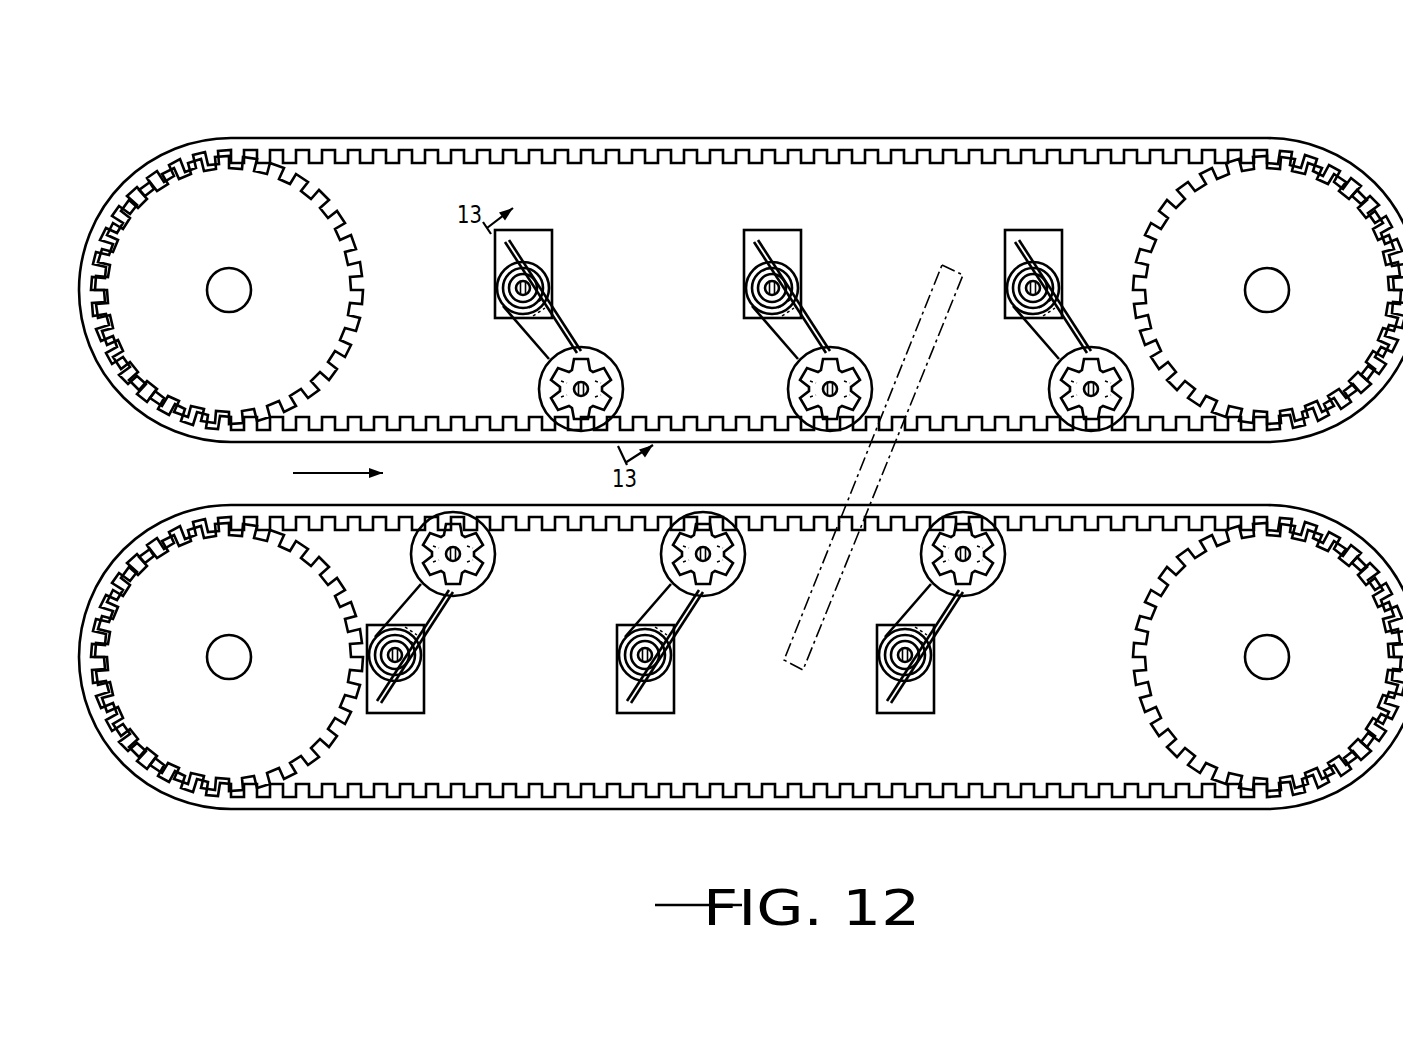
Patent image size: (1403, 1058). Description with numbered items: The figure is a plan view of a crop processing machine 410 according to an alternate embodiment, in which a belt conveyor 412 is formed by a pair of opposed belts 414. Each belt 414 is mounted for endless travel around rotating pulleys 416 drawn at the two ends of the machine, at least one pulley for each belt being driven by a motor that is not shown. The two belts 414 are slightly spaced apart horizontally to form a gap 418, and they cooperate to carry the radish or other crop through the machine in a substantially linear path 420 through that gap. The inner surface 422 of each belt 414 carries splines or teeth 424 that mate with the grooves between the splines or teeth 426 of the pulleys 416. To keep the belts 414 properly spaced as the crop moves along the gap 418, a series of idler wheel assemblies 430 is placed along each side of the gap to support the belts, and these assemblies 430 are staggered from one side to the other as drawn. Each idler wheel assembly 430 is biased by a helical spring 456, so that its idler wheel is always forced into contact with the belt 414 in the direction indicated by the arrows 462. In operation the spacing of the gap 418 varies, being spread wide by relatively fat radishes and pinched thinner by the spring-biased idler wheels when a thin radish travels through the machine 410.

The crop processing machine 410 is at (200, 110).
The belt conveyor 412 is at (155, 454).
The opposed belts 414 is at (240, 505).
The rotating pulleys 416 is at (328, 187).
The gap 418 is at (1295, 472).
The linear path 420 is at (360, 473).
The inner surface 422 is at (805, 167).
The teeth 424 is at (547, 162).
The teeth 426 is at (1145, 228).
The idler wheel assemblies 430 is at (745, 272).
The helical spring 456 is at (923, 381).
The arrows 462 is at (865, 355).